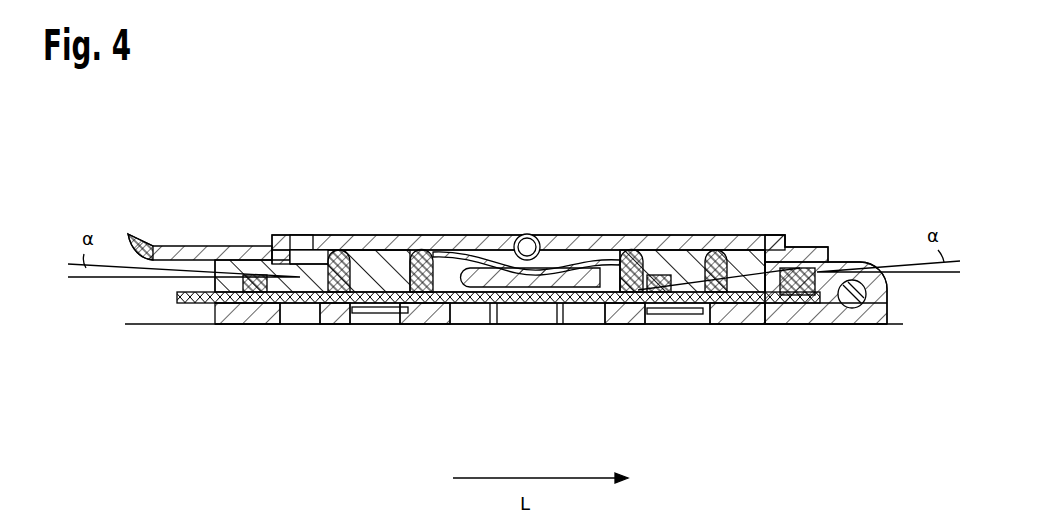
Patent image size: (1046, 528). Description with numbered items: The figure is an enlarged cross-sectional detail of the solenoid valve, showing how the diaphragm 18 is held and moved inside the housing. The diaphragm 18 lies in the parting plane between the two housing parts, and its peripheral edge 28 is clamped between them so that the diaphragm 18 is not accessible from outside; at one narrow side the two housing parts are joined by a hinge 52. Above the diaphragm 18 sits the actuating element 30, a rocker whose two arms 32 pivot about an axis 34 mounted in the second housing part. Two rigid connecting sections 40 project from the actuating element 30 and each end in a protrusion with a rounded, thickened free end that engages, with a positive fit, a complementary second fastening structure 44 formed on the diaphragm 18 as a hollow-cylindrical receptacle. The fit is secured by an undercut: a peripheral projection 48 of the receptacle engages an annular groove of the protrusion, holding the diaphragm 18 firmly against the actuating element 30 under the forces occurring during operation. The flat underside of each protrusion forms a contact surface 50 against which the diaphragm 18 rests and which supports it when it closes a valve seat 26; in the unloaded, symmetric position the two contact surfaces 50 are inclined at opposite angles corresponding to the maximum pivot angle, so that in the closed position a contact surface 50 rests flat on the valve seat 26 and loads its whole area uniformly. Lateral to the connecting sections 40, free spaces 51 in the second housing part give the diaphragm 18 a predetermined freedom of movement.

The diaphragm 18 is at (772, 315).
The valve seat 26 is at (358, 320).
The peripheral edge 28 is at (798, 275).
The actuating element 30 is at (576, 220).
The arm 32 is at (447, 243).
The axis 34 is at (523, 237).
The connecting section 40 is at (380, 260).
The second fastening structure 44 is at (440, 310).
The peripheral projection 48 is at (310, 307).
The contact surface 50 is at (392, 307).
The free space 51 is at (318, 262).
The hinge 52 is at (850, 282).